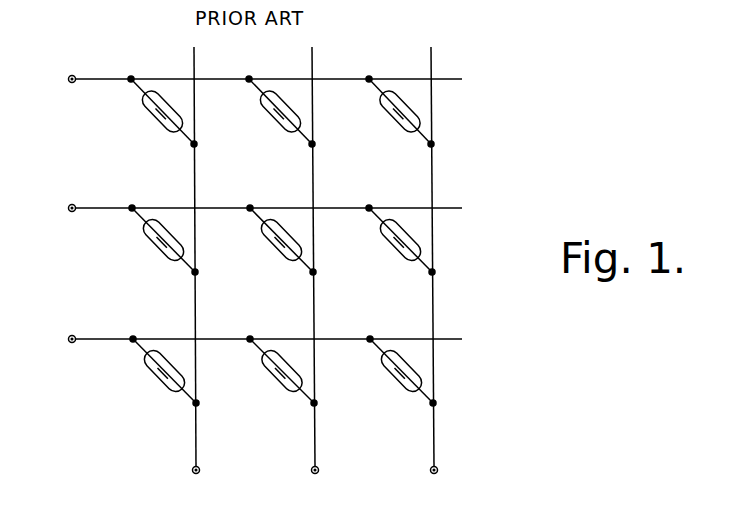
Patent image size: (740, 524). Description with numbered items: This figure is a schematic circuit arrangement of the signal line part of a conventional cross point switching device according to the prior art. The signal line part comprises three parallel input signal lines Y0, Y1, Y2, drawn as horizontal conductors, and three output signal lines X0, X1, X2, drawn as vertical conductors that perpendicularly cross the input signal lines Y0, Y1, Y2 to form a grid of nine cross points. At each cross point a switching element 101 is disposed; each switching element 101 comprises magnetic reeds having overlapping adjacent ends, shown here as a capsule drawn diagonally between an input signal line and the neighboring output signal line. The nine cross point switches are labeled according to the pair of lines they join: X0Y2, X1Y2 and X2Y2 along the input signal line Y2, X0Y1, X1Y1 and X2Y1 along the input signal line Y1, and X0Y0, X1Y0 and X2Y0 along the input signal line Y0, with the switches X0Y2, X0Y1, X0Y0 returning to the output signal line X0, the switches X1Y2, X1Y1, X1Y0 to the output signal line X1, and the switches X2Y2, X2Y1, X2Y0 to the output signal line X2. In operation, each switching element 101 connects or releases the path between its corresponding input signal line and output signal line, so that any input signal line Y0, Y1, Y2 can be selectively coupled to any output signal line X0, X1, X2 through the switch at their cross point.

The switching element 101 is at (164, 94).
The output signal line X0 is at (203, 276).
The output signal line X1 is at (315, 273).
The output signal line X2 is at (434, 273).
The input signal line Y0 is at (252, 340).
The input signal line Y1 is at (252, 209).
The input signal line Y2 is at (252, 80).
The diode at X0Y2 is at (159, 101).
The diode at X1Y2 is at (276, 117).
The diode at X2Y2 is at (396, 117).
The diode at X0Y1 is at (160, 247).
The diode at X1Y1 is at (277, 247).
The diode at X2Y1 is at (396, 247).
The diode at X0Y0 is at (160, 378).
The diode at X1Y0 is at (277, 378).
The diode at X2Y0 is at (398, 378).